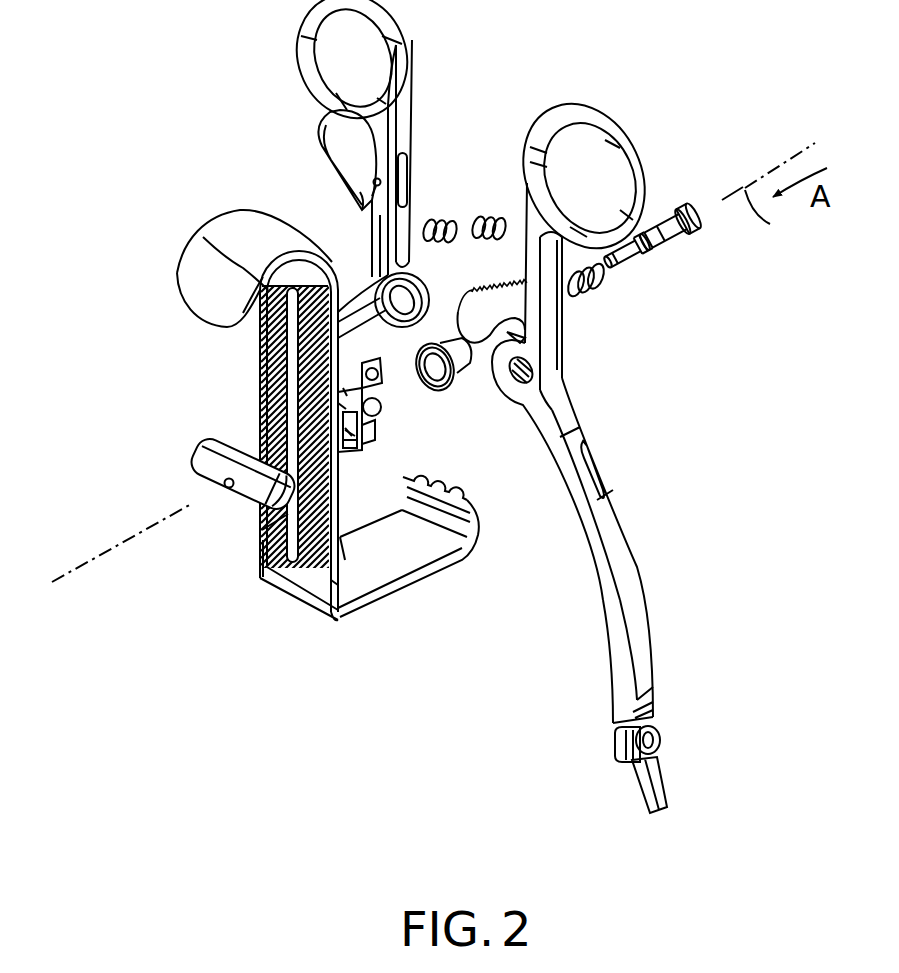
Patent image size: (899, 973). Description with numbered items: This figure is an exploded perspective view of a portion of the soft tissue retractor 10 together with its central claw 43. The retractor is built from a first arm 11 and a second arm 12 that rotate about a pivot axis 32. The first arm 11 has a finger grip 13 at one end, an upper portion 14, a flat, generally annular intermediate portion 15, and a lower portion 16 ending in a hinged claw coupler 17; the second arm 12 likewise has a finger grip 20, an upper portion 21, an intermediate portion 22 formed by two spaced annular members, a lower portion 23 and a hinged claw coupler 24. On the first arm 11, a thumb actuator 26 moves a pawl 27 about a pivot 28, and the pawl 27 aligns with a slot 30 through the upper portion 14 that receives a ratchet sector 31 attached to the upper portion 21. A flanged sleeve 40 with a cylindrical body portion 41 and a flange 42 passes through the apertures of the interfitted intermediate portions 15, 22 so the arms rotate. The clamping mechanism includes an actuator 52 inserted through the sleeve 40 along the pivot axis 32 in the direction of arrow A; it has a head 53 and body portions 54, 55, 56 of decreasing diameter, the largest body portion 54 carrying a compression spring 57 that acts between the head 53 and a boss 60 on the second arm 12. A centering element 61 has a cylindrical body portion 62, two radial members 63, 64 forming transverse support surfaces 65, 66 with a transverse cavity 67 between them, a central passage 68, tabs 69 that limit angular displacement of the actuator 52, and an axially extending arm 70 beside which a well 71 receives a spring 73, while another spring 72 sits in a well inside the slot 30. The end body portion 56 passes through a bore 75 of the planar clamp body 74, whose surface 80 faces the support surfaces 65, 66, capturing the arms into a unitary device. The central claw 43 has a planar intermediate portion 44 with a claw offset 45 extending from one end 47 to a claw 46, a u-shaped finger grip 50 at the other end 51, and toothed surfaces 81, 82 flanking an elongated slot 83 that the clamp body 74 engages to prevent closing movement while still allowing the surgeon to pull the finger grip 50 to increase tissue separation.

The soft tissue retractor 10 is at (798, 139).
The first arm 11 is at (412, 82).
The second arm 12 is at (562, 325).
The finger grip 13 is at (301, 34).
The upper portion 14 is at (404, 128).
The intermediate portion 15 is at (427, 304).
The lower portion 16 is at (347, 297).
The hinged claw coupler 17 is at (268, 583).
The finger grip 20 is at (608, 117).
The upper portion 21 is at (550, 343).
The intermediate portion 22 is at (557, 397).
The lower portion 23 is at (633, 570).
The hinged claw coupler 24 is at (675, 768).
The thumb actuator 26 is at (327, 123).
The pawl 27 is at (367, 193).
The pivot 28 is at (363, 203).
The slot 30 is at (400, 208).
The ratchet sector 31 is at (485, 300).
The pivot axis 32 is at (765, 219).
The flanged sleeve 40 is at (467, 378).
The cylindrical body portion 41 is at (478, 357).
The flange 42 is at (438, 393).
The central claw 43 is at (428, 605).
The planar intermediate portion 44 is at (337, 527).
The claw offset 45 is at (430, 547).
The claw 46 is at (460, 488).
The end 47 is at (320, 592).
The u-shaped finger grip 50 is at (235, 227).
The other end 51 is at (203, 237).
The actuator 52 is at (686, 178).
The head 53 is at (692, 200).
The body portion 54 is at (702, 234).
The body portion 55 is at (668, 244).
The end body portion 56 is at (631, 261).
The compression spring 57 is at (603, 291).
The boss 60 is at (563, 363).
The centering element 61 is at (389, 432).
The cylindrical body portion 62 is at (382, 411).
The radial member 63 is at (358, 383).
The radial member 64 is at (360, 443).
The transverse support surface 65 is at (350, 392).
The transverse support surface 66 is at (347, 432).
The transverse cavity 67 is at (343, 447).
The central passage 68 is at (370, 438).
The tabs 69 is at (342, 406).
The axially extending arm 70 is at (367, 353).
The well 71 is at (378, 381).
The spring 72 is at (432, 222).
The spring 73 is at (485, 220).
The clamp body 74 is at (238, 512).
The bore 75 is at (232, 498).
The surface 80 is at (247, 450).
The elongated toothed surface 81 is at (267, 537).
The elongated toothed surface 82 is at (310, 553).
The elongated slot 83 is at (290, 557).